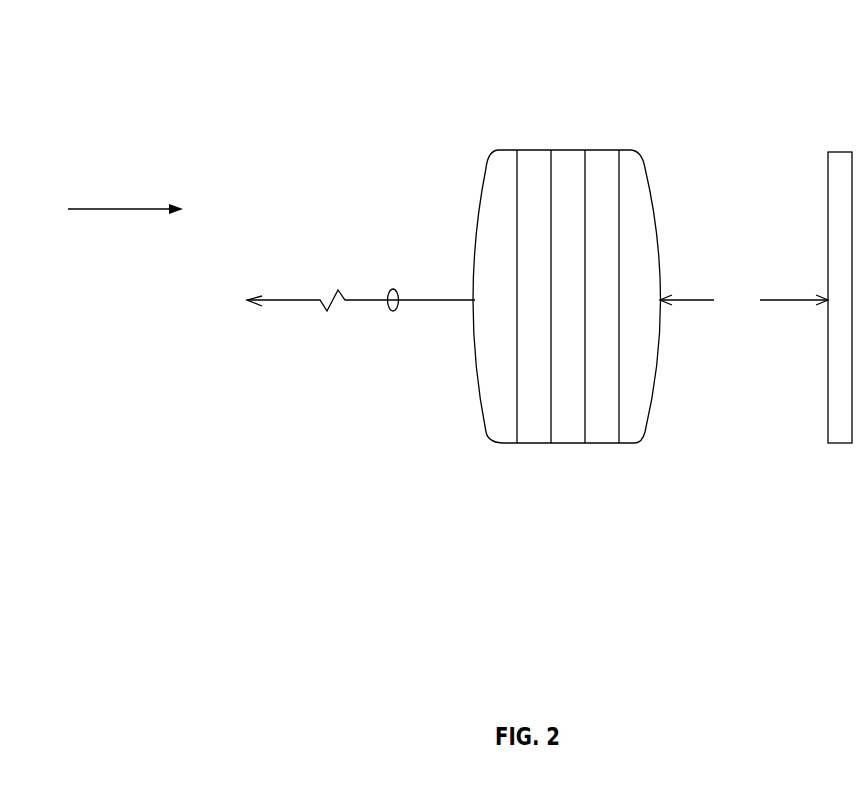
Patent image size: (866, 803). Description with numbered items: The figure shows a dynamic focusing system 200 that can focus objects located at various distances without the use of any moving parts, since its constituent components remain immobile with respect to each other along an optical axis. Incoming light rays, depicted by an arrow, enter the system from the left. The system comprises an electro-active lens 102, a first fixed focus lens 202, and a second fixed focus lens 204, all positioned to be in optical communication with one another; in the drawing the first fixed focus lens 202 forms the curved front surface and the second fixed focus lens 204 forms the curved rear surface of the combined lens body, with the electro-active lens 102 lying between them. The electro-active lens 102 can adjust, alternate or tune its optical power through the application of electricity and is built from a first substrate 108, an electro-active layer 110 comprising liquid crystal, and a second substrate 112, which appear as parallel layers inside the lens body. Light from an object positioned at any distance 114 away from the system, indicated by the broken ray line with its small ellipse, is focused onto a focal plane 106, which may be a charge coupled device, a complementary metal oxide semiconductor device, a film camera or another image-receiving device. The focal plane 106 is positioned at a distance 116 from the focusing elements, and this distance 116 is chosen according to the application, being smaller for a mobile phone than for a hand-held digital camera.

The dynamic focusing system 200 is at (212, 68).
The electro-active lens 102 is at (627, 517).
The focal plane 106 is at (842, 447).
The first substrate 108 is at (532, 150).
The electro-active layer 110 is at (567, 443).
The second substrate 112 is at (602, 150).
The distance 114 is at (390, 308).
The distance 116 is at (744, 299).
The first fixed focus lens 202 is at (482, 394).
The second fixed focus lens 204 is at (653, 395).